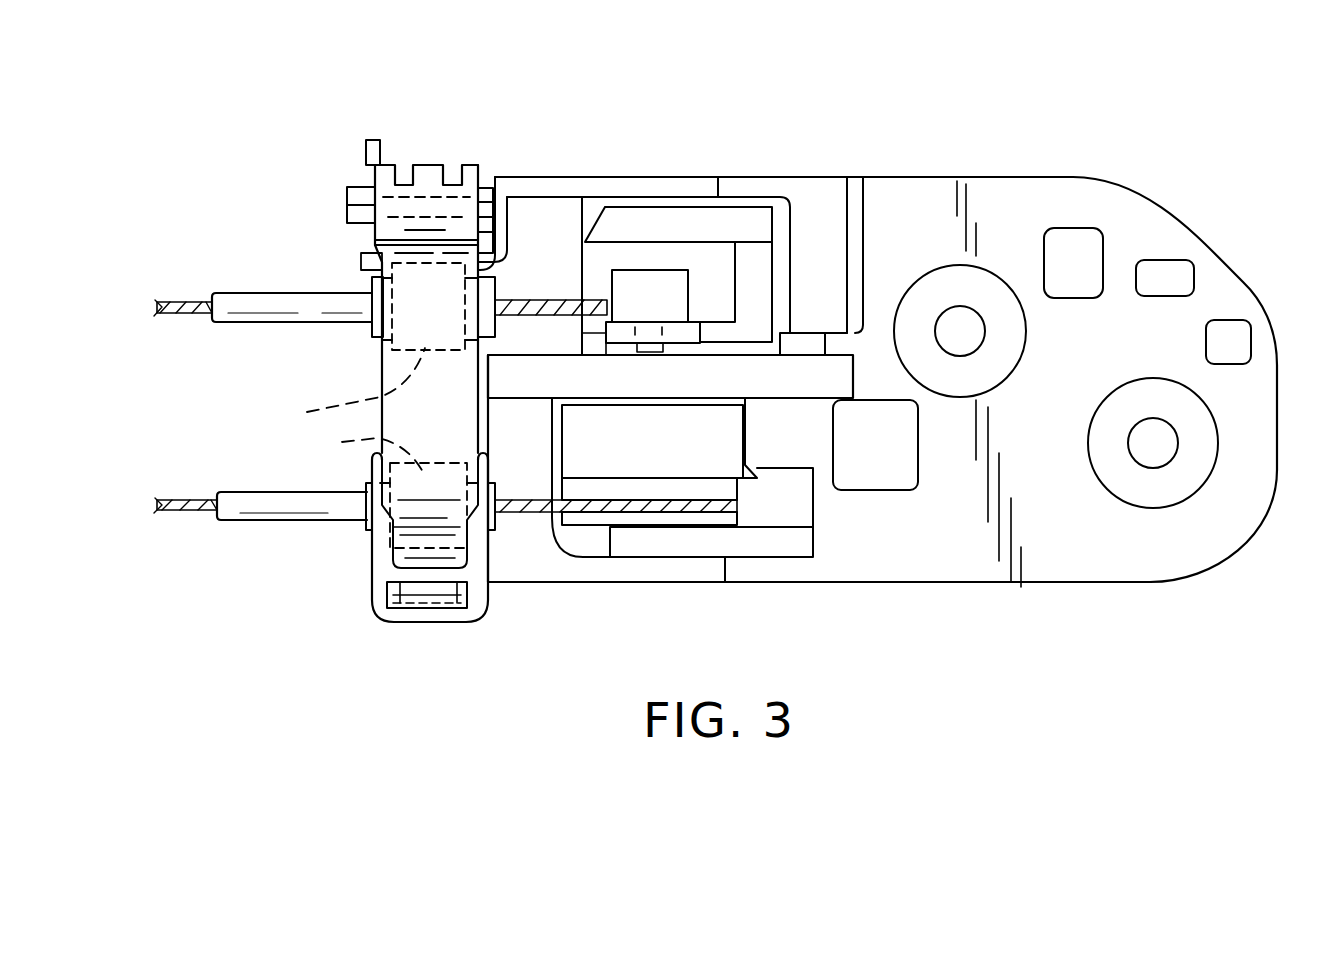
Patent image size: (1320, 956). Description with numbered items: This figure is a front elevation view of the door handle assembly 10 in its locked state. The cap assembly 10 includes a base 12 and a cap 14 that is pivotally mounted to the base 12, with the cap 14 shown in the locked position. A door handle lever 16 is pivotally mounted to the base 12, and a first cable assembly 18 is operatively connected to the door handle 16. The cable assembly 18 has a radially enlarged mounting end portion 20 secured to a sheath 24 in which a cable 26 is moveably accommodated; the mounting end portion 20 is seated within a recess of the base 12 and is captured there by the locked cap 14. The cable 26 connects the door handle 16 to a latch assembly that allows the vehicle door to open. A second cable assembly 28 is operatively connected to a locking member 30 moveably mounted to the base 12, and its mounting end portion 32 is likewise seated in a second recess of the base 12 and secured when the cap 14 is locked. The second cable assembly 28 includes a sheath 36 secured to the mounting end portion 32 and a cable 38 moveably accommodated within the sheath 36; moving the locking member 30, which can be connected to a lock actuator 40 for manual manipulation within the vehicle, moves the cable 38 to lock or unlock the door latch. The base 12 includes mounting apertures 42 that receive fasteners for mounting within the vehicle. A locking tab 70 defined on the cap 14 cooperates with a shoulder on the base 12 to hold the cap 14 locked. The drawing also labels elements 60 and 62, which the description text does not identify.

The cap assembly 10 is at (713, 365).
The base 12 is at (940, 176).
The cap 14 is at (380, 361).
The door handle lever 16 is at (690, 520).
The cable assembly 18 is at (348, 527).
The mounting end portion 20 is at (362, 457).
The sheath 24 is at (248, 521).
The cable 26 is at (600, 513).
The second cable assembly 28 is at (340, 326).
The locking member 30 is at (685, 331).
The mounting end portion 32 is at (346, 390).
The sheath 36 is at (277, 295).
The cable 38 is at (562, 300).
The lock actuator 40 is at (731, 226).
The mounting apertures 42 is at (1145, 440).
The nut 60 is at (352, 187).
The adjustment head 62 is at (436, 155).
The locking tab 70 is at (418, 601).